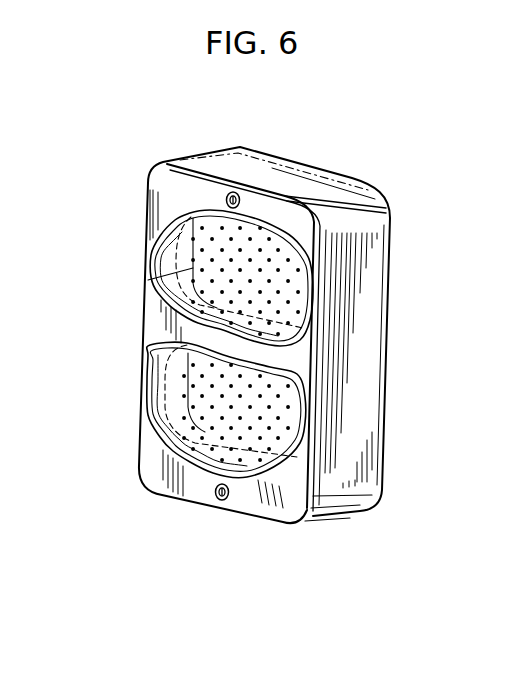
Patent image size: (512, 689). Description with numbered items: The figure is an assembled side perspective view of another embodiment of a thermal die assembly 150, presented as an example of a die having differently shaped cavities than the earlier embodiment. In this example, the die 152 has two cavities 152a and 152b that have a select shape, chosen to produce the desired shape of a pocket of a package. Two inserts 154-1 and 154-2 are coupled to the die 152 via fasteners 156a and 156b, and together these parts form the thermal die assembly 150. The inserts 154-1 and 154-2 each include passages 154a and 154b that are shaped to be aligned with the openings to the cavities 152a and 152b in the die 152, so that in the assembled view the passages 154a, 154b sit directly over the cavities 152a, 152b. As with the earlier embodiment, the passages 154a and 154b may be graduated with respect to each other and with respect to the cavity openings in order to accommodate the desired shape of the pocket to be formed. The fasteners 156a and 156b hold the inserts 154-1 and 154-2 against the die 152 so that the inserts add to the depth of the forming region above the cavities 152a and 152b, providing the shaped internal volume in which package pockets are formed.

The thermal die assembly 150 is at (352, 166).
The die 152 is at (370, 375).
The cavity 152a is at (300, 292).
The cavity 152b is at (297, 430).
The insert 154-1 is at (303, 522).
The insert 154-2 is at (330, 514).
The passage 154a is at (183, 258).
The passage 154b is at (187, 413).
The fastener 156a is at (236, 193).
The fastener 156b is at (222, 500).